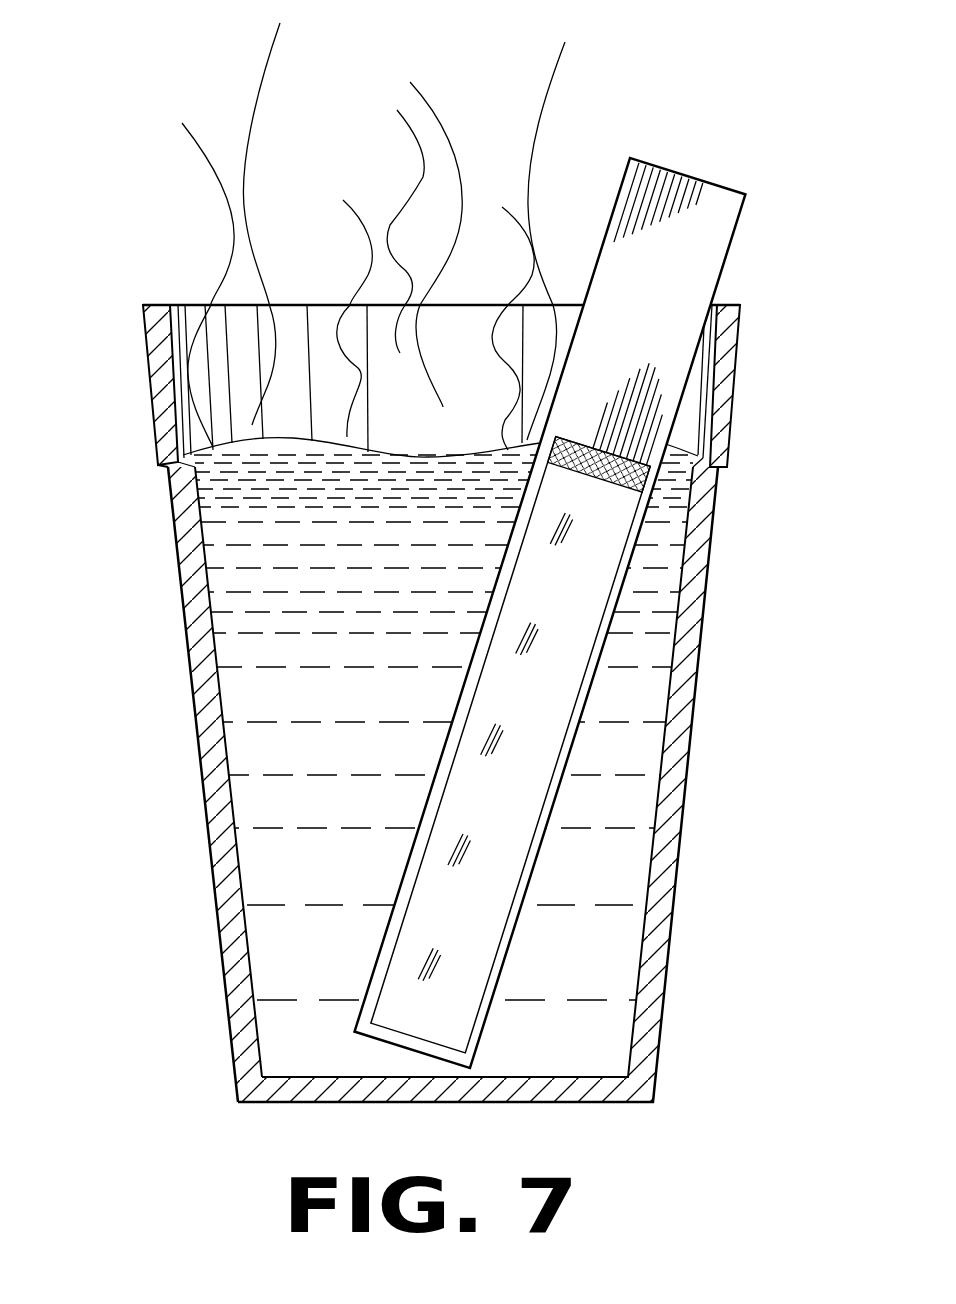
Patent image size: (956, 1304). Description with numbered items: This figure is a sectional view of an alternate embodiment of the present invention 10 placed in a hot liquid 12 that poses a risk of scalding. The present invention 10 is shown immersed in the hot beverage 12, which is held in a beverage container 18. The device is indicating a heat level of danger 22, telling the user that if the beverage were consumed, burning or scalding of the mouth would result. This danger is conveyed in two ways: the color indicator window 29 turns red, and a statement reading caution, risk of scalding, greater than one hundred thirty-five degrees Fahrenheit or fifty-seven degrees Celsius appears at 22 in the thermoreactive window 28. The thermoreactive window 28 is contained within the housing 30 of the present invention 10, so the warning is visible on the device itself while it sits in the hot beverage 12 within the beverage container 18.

The present invention 10 is at (467, 562).
The hot liquid 12 is at (578, 1002).
The beverage container 18 is at (230, 912).
The heat level of danger 22 is at (525, 698).
The thermoreactive window 28 is at (498, 757).
The color indicator window 29 is at (614, 417).
The housing 30 is at (589, 575).